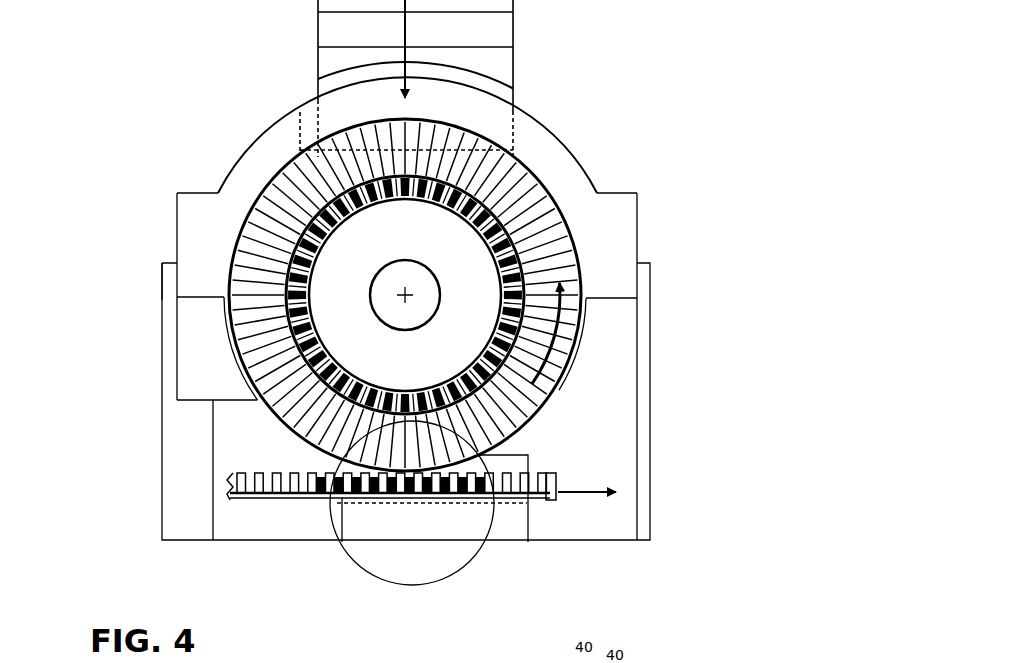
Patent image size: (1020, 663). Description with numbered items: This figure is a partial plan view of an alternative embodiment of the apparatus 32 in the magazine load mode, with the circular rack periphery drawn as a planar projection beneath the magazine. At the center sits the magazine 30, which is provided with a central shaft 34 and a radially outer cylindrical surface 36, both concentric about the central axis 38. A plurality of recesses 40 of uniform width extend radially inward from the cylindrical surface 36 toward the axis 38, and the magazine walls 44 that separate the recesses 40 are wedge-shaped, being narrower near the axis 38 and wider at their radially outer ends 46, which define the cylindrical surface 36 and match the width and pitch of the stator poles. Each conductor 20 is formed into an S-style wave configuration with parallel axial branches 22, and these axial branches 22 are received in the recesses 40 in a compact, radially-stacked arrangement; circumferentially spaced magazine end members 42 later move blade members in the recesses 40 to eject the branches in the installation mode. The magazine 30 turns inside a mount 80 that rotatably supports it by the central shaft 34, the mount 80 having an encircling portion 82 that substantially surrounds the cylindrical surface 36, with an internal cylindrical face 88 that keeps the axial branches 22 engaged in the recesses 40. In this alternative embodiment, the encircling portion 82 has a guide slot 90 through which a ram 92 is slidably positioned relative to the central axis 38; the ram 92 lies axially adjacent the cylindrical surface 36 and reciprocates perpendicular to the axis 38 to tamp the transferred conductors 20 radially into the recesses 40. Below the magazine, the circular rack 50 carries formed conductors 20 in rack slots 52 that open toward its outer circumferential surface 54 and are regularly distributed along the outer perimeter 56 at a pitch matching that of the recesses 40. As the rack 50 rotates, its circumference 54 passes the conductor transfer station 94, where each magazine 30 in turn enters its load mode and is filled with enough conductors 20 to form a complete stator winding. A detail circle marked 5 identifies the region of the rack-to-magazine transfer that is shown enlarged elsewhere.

The detail circle (FIG. 5 region) 5 is at (460, 567).
The conductor 20 is at (401, 543).
The axial branches 22 is at (303, 500).
The magazine 30 is at (455, 294).
The apparatus 32 is at (720, 83).
The central shaft 34 is at (415, 275).
The radially outer cylindrical surface 36 is at (562, 207).
The central axis 38 is at (412, 300).
The recesses 40 is at (583, 280).
The magazine end members 42 is at (300, 223).
The magazine walls 44 is at (580, 395).
The radially outer ends 46 is at (545, 418).
The circular rack 50 is at (229, 498).
The rack slots 52 is at (273, 470).
The outer circumferential surface 54 is at (317, 462).
The outer perimeter 56 is at (550, 478).
The mount 80 is at (153, 254).
The encircling portion 82 is at (527, 133).
The internal cylindrical face 88 is at (238, 243).
The guide slot 90 is at (305, 95).
The ram 92 is at (513, 25).
The conductor transfer station 94 is at (125, 233).